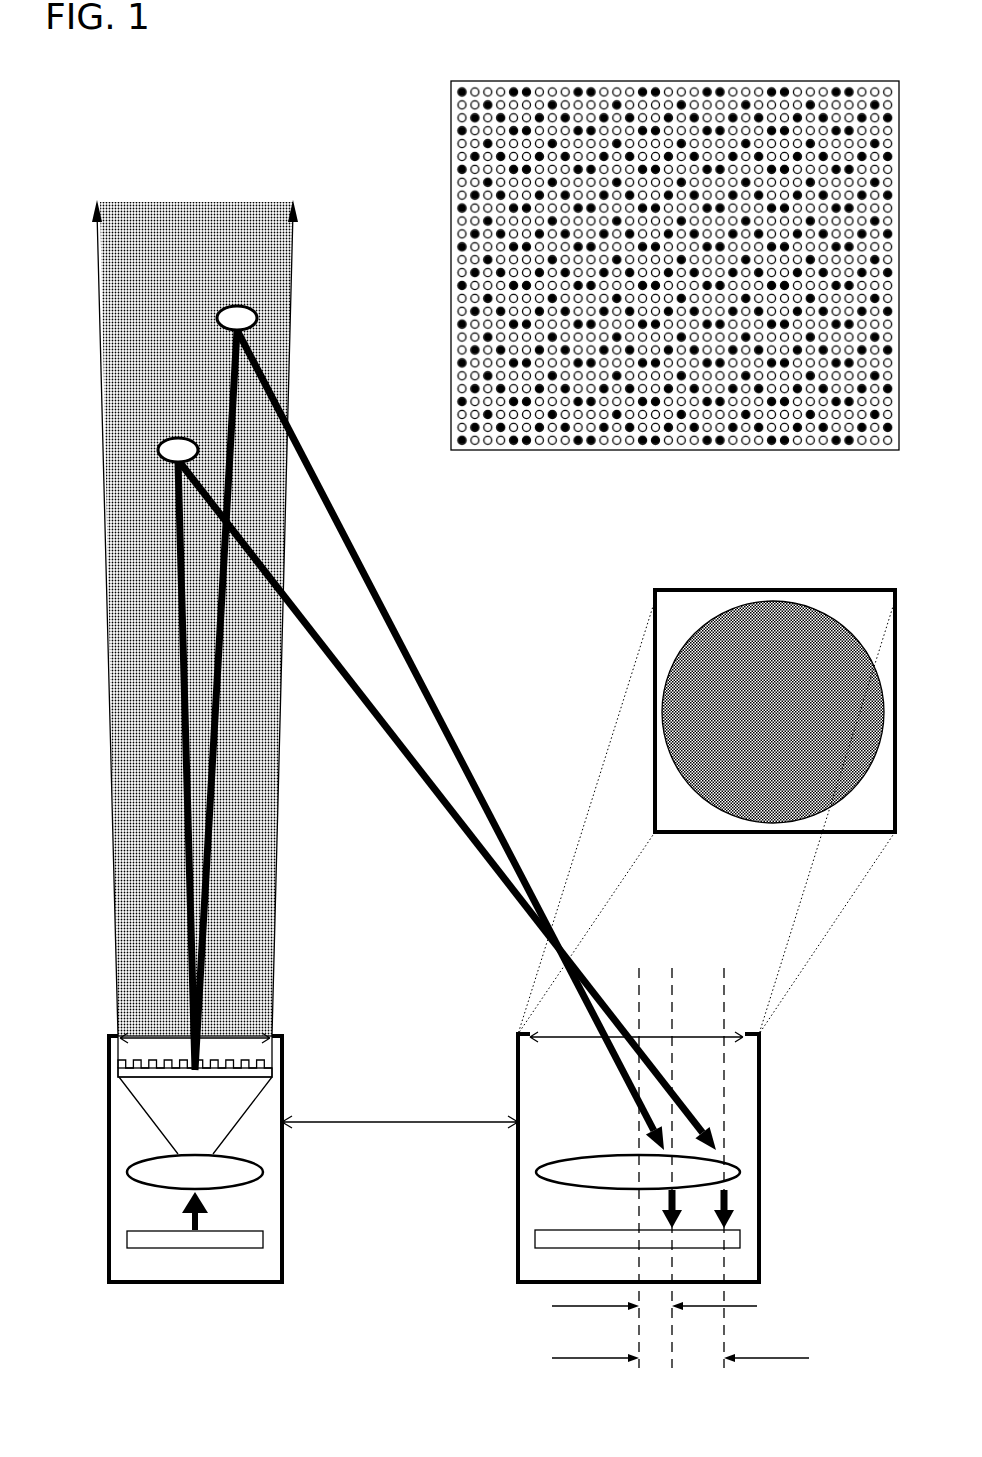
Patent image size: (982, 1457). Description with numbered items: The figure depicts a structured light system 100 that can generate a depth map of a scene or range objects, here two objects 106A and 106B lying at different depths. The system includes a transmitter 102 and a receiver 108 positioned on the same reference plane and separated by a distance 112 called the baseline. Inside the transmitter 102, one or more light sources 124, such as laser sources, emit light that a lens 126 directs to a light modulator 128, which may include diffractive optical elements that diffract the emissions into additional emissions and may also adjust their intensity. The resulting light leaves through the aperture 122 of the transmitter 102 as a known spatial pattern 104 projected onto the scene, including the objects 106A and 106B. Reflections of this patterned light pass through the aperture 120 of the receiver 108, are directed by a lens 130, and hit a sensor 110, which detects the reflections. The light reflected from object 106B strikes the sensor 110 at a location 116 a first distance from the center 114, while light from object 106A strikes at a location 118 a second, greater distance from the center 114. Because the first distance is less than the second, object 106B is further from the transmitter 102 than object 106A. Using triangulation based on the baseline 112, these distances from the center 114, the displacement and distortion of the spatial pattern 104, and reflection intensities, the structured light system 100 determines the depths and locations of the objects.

The structured light system 100 is at (340, 101).
The transmitter 102 is at (109, 1140).
The spatial pattern 104 is at (451, 287).
The object 106A is at (176, 437).
The object 106B is at (243, 305).
The receiver 108 is at (760, 1103).
The sensor 110 is at (535, 1238).
The distance 112 is at (328, 1120).
The center 114 is at (640, 976).
The location 116 is at (674, 976).
The location 118 is at (726, 976).
The aperture 120 is at (553, 1037).
The aperture 122 is at (118, 1036).
The light sources 124 is at (143, 1250).
The lens 126 is at (127, 1172).
The light modulator 128 is at (282, 1072).
The lens 130 is at (535, 1172).